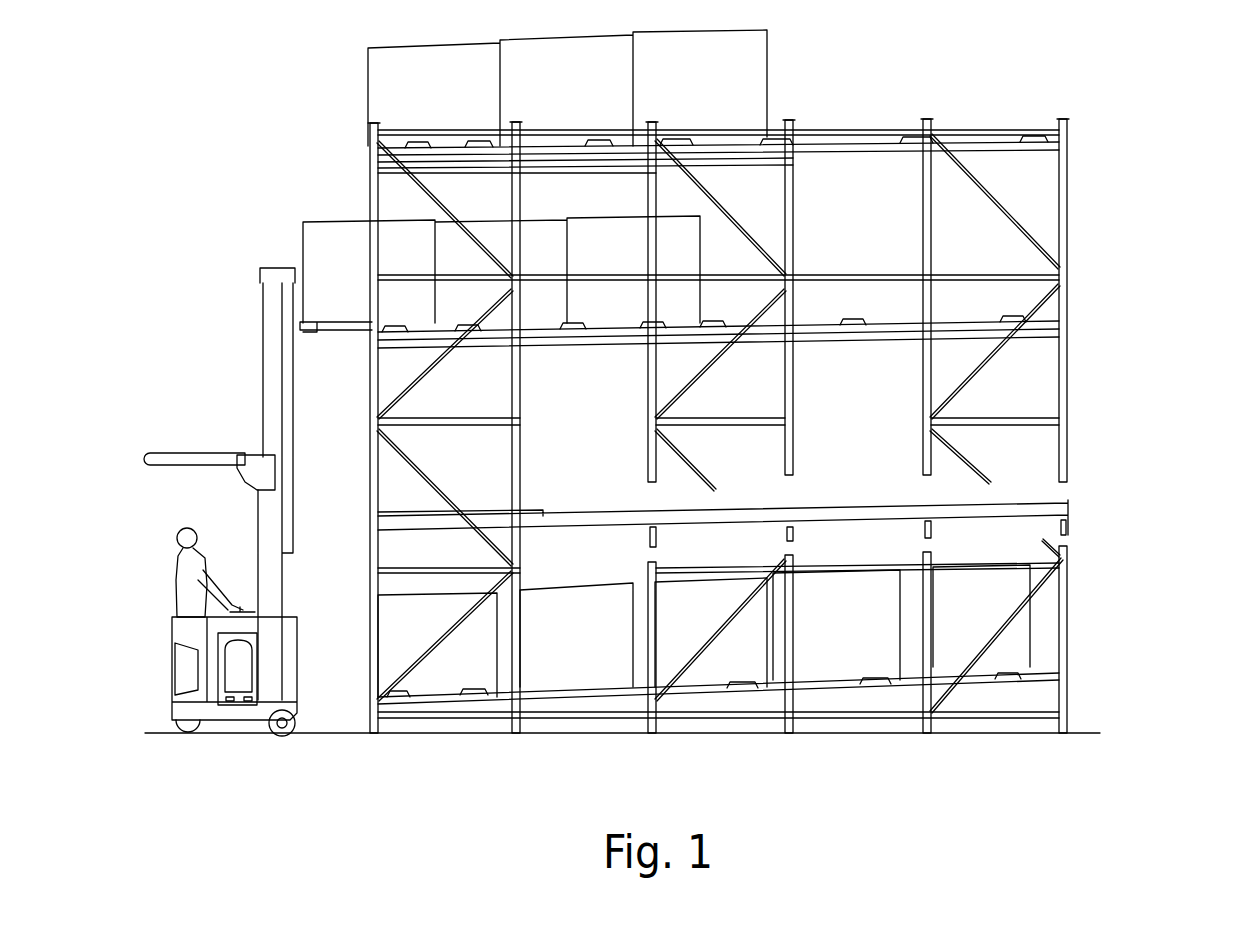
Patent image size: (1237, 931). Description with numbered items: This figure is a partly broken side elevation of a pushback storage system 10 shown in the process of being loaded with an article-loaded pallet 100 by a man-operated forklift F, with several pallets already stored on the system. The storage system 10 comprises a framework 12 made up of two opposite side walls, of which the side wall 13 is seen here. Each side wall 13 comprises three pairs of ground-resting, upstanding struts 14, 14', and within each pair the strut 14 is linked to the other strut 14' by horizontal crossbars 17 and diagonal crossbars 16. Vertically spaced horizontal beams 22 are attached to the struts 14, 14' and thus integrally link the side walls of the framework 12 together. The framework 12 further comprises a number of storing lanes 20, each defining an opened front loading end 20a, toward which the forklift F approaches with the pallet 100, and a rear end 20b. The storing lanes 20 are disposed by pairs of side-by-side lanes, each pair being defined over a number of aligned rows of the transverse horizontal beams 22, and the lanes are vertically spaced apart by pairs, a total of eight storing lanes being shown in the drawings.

The pushback storage system 10 is at (1038, 95).
The framework 12 is at (1068, 447).
The side wall 13 is at (1068, 568).
The strut 14 is at (682, 121).
The strut 14' is at (718, 107).
The diagonal crossbar 16 is at (968, 173).
The horizontal crossbar 17 is at (1005, 272).
The storing lane 20 is at (1068, 165).
The front loading end 20a is at (372, 206).
The rear end 20b is at (1110, 426).
The horizontal beam 22 is at (648, 525).
The article-loaded pallet 100 is at (345, 325).
The forklift F is at (263, 366).